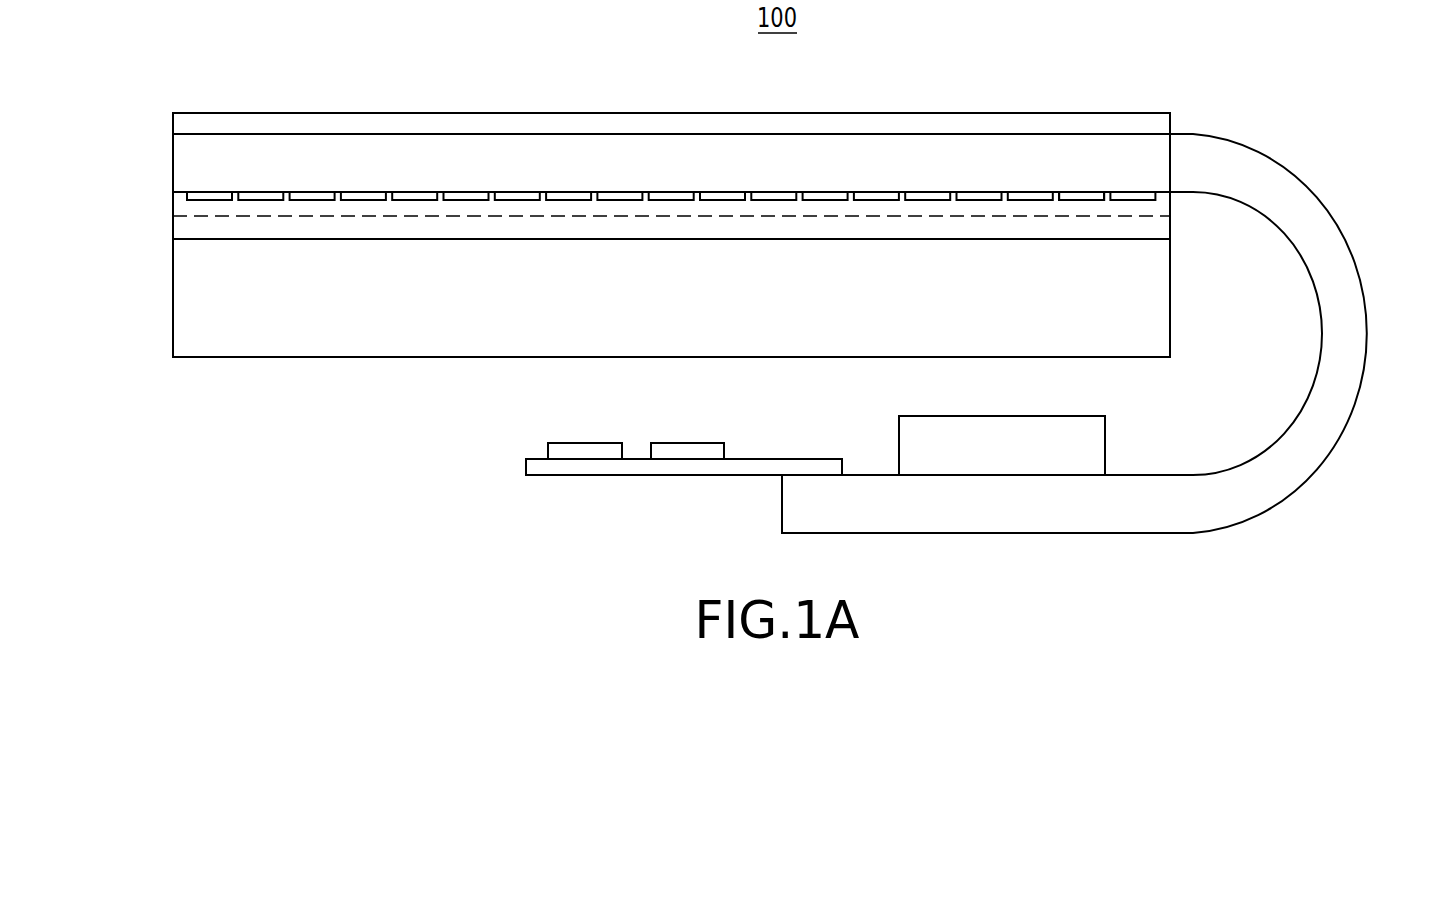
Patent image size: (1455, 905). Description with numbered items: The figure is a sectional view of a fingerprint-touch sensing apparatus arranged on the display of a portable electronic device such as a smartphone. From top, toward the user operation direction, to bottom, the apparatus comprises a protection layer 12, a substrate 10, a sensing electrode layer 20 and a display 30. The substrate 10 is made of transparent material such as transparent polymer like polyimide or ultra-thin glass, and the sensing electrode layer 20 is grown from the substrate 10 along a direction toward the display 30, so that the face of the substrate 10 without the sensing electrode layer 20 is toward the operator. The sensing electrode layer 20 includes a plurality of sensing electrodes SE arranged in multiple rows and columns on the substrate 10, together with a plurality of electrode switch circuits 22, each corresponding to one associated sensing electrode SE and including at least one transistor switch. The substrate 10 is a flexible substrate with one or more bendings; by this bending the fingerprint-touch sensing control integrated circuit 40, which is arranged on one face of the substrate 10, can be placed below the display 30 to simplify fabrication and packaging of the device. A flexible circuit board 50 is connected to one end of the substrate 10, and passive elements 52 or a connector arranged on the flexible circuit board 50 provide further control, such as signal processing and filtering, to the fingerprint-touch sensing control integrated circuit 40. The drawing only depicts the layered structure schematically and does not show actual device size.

The substrate 10 is at (1327, 210).
The protection layer 12 is at (772, 122).
The sensing electrode layer 20 is at (213, 230).
The electrode switch circuits 22 is at (185, 205).
The sensing electrodes SE is at (1082, 195).
The display 30 is at (257, 345).
The fingerprint-touch sensing control integrated circuit 40 is at (972, 423).
The flexible circuit board 50 is at (570, 468).
The passive elements 52 is at (575, 445).